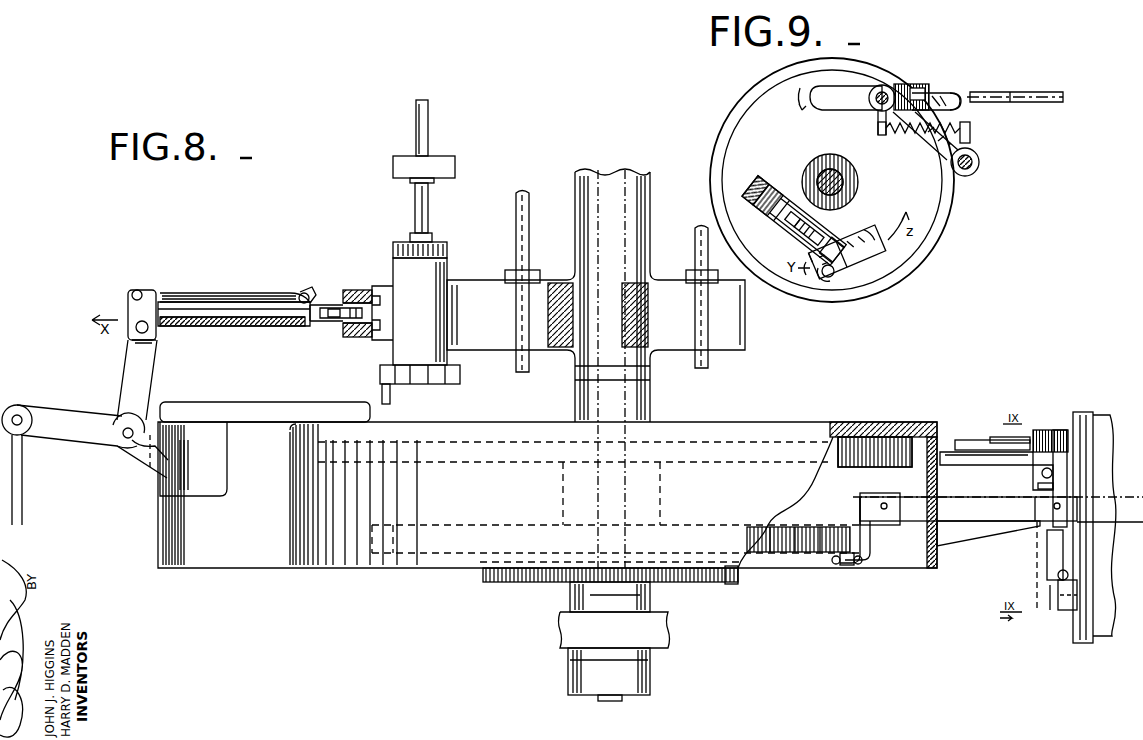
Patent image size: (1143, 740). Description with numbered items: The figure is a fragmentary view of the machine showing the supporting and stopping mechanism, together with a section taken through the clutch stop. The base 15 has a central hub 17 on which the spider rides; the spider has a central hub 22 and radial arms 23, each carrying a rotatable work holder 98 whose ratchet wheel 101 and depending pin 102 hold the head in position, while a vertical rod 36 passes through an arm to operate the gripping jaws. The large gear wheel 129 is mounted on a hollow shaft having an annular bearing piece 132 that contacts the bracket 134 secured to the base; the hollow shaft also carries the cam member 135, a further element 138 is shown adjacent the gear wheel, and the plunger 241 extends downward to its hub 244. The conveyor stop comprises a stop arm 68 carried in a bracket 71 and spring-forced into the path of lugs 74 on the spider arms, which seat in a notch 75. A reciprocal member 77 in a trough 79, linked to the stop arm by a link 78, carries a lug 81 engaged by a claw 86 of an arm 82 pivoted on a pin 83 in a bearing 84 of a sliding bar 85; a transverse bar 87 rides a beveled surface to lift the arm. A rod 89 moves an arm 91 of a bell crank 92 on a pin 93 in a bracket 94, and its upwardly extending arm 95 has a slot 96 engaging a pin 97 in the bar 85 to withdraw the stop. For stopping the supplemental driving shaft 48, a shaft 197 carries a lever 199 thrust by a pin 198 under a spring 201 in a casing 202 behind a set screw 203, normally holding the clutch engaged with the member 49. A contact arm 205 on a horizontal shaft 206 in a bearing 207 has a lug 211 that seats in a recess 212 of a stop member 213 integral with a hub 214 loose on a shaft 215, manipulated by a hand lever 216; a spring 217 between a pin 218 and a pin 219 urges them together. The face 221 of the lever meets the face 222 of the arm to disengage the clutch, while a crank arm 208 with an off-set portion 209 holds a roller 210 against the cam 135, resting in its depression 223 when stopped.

In FIG. 8, the base 15 is at (425, 569).
In FIG. 8, the hub 17 is at (650, 394).
In FIG. 8, the hub 22 is at (650, 240).
In FIG. 8, the arms 23 is at (500, 351).
In FIG. 8, the vertical rod 36 is at (529, 268).
In FIG. 9, the supplemental driving shaft 48 is at (843, 182).
In FIG. 8, the clutch member 49 is at (1105, 420).
In FIG. 9, the clutch member 49 is at (950, 224).
In FIG. 8, the stop arm 68 is at (371, 340).
In FIG. 8, the bracket 71 is at (354, 287).
In FIG. 8, the lugs 74 is at (388, 299).
In FIG. 8, the notch 75 is at (378, 322).
In FIG. 8, the reciprocal member 77 is at (318, 325).
In FIG. 8, the link 78 is at (348, 339).
In FIG. 8, the trough 79 is at (240, 300).
In FIG. 8, the lug 81 is at (298, 327).
In FIG. 8, the arm 82 is at (188, 302).
In FIG. 8, the pin 83 is at (139, 291).
In FIG. 8, the bearing 84 is at (128, 300).
In FIG. 8, the sliding bar 85 is at (210, 328).
In FIG. 8, the claw 86 is at (314, 328).
In FIG. 8, the transverse bar 87 is at (310, 286).
In FIG. 8, the rod 89 is at (5, 511).
In FIG. 8, the arm 91 is at (80, 445).
In FIG. 8, the bell crank 92 is at (118, 448).
In FIG. 8, the pin 93 is at (148, 448).
In FIG. 8, the bracket 94 is at (212, 496).
In FIG. 8, the upwardly extending arm 95 is at (128, 376).
In FIG. 8, the slot 96 is at (150, 338).
In FIG. 8, the pin 97 is at (130, 339).
In FIG. 8, the work holder 98 is at (419, 171).
In FIG. 8, the ratchet wheel 101 is at (436, 385).
In FIG. 8, the pin 102 is at (391, 396).
In FIG. 8, the gear wheel 129 is at (898, 468).
In FIG. 8, the annular bearing piece 132 is at (651, 595).
In FIG. 8, the bracket 134 is at (672, 630).
In FIG. 8, the cam member 135 is at (816, 526).
In FIG. 8, the gear 138 is at (731, 583).
In FIG. 8, the shaft 197 is at (1050, 600).
In FIG. 9, the shaft 197 is at (835, 277).
In FIG. 8, the pin 198 is at (1058, 576).
In FIG. 9, the pin 198 is at (836, 246).
In FIG. 8, the lever 199 is at (1065, 612).
In FIG. 9, the lever 199 is at (868, 268).
In FIG. 9, the spring 201 is at (784, 226).
In FIG. 8, the casing 202 is at (1050, 555).
In FIG. 9, the casing 202 is at (768, 210).
In FIG. 9, the set screw 203 is at (768, 175).
In FIG. 9, the contact arm 205 is at (842, 110).
In FIG. 8, the horizontal shaft 206 is at (859, 498).
In FIG. 9, the horizontal shaft 206 is at (973, 170).
In FIG. 8, the bearing 207 is at (1110, 533).
In FIG. 9, the bearing 207 is at (981, 160).
In FIG. 8, the crank arm 208 is at (871, 540).
In FIG. 8, the off-set portion 209 is at (860, 563).
In FIG. 8, the roller 210 is at (844, 566).
In FIG. 8, the lug 211 is at (1048, 430).
In FIG. 9, the lug 211 is at (918, 90).
In FIG. 9, the recess 212 is at (937, 98).
In FIG. 8, the stop member 213 is at (1062, 430).
In FIG. 9, the stop member 213 is at (960, 108).
In FIG. 8, the hub 214 is at (1011, 417).
In FIG. 9, the hub 214 is at (885, 86).
In FIG. 8, the shaft 215 is at (1035, 474).
In FIG. 9, the shaft 215 is at (879, 112).
In FIG. 8, the hand lever 216 is at (985, 440).
In FIG. 9, the hand lever 216 is at (1020, 92).
In FIG. 8, the spring 217 is at (1054, 473).
In FIG. 9, the spring 217 is at (912, 134).
In FIG. 8, the pin 218 is at (1038, 487).
In FIG. 9, the pin 218 is at (971, 135).
In FIG. 9, the pin 219 is at (881, 136).
In FIG. 9, the face 221 is at (882, 254).
In FIG. 9, the face 222 is at (928, 158).
In FIG. 8, the depression 223 is at (830, 561).
In FIG. 8, the plunger 241 is at (624, 700).
In FIG. 8, the hub 244 is at (651, 671).